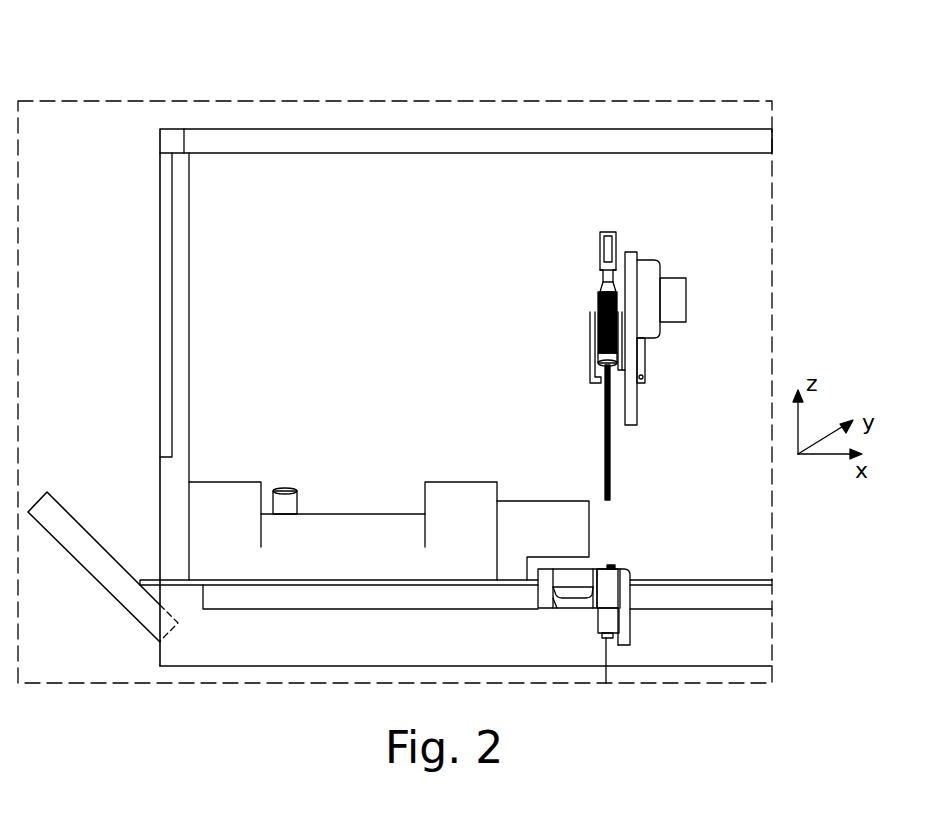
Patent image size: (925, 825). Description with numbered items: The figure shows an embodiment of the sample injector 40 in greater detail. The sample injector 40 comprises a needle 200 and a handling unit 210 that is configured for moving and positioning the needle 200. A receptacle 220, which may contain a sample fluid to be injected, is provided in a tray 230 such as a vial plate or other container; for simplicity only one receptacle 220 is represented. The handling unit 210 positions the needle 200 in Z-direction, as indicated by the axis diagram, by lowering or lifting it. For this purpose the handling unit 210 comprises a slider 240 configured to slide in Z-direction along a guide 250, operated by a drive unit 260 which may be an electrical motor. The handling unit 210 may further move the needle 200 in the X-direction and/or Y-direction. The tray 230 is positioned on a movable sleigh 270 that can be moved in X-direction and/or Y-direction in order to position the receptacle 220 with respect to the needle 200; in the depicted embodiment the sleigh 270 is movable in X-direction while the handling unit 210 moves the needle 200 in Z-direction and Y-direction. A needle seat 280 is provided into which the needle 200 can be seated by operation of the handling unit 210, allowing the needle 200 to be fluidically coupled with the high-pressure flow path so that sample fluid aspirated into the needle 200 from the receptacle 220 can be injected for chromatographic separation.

The sample injector 40 is at (441, 140).
The needle 200 is at (613, 437).
The handling unit 210 is at (662, 252).
The receptacle 220 is at (290, 489).
The tray 230 is at (452, 492).
The slider 240 is at (596, 340).
The guide 250 is at (633, 253).
The drive unit 260 is at (678, 313).
The movable sleigh 270 is at (548, 505).
The needle seat 280 is at (612, 597).